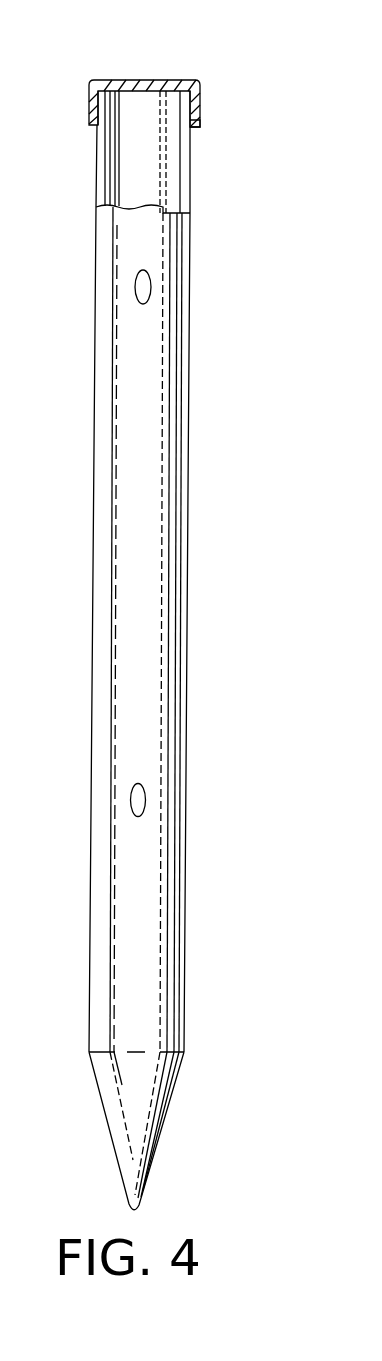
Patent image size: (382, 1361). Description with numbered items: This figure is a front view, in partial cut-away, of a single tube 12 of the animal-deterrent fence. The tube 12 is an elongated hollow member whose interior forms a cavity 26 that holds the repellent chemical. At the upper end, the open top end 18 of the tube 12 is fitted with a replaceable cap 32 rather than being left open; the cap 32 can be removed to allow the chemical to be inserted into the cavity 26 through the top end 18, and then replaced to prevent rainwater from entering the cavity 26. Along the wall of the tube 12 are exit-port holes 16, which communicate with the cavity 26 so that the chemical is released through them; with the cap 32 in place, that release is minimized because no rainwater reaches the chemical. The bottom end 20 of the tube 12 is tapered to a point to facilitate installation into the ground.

The tube 12 is at (93, 673).
The exit-port holes 16 is at (151, 286).
The top end 18 is at (150, 95).
The bottom end 20 is at (148, 1167).
The cavity 26 is at (165, 172).
The replaceable cap 32 is at (200, 110).